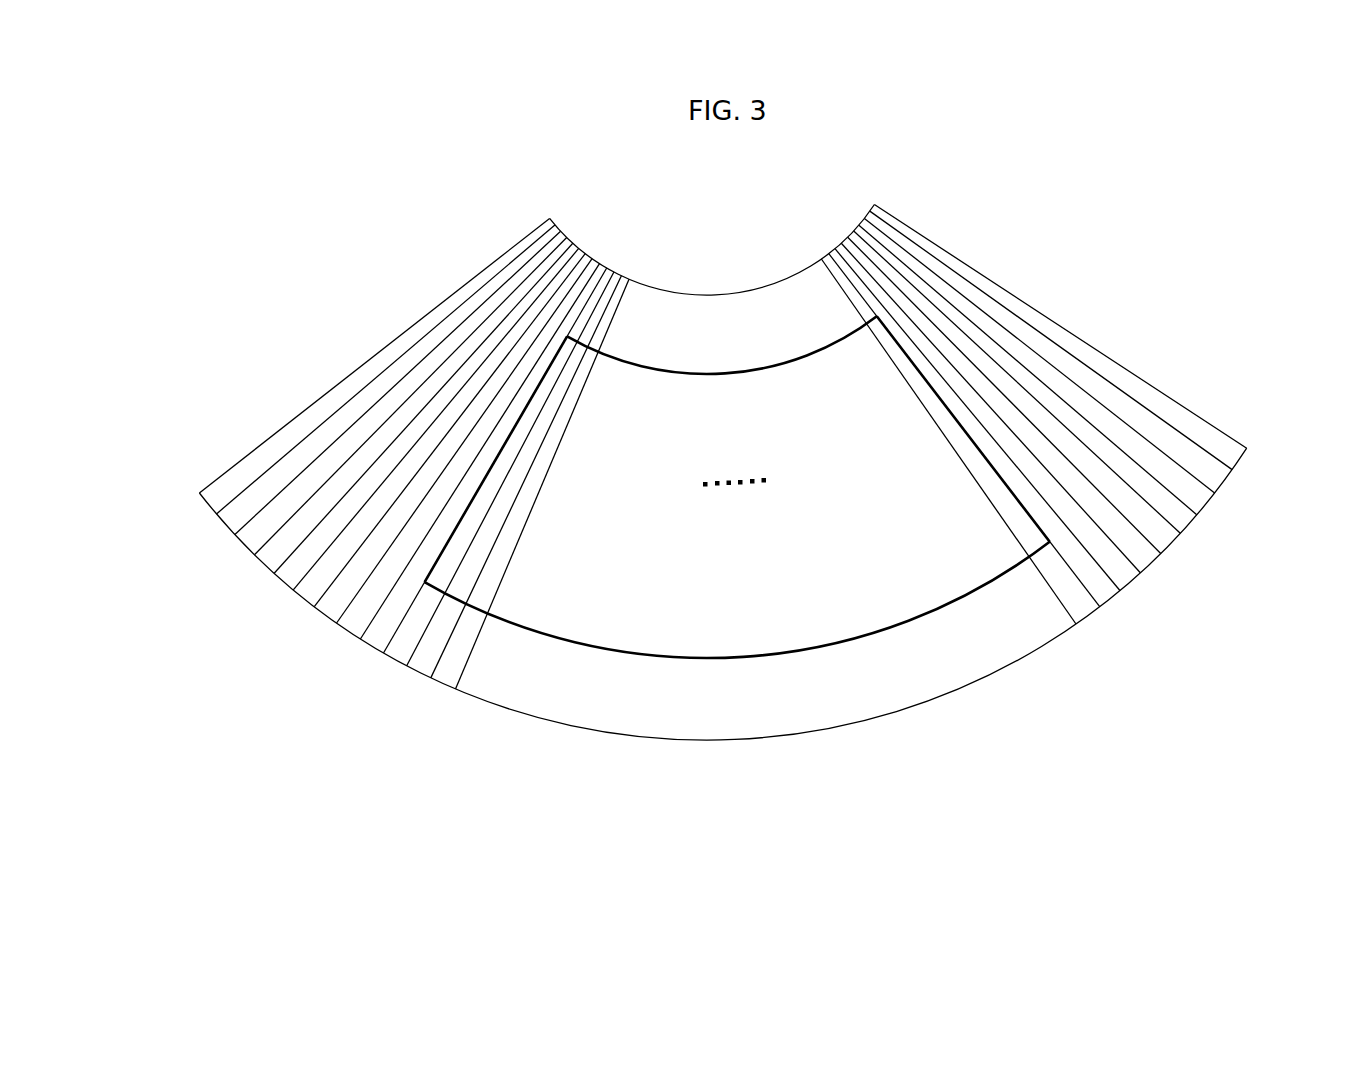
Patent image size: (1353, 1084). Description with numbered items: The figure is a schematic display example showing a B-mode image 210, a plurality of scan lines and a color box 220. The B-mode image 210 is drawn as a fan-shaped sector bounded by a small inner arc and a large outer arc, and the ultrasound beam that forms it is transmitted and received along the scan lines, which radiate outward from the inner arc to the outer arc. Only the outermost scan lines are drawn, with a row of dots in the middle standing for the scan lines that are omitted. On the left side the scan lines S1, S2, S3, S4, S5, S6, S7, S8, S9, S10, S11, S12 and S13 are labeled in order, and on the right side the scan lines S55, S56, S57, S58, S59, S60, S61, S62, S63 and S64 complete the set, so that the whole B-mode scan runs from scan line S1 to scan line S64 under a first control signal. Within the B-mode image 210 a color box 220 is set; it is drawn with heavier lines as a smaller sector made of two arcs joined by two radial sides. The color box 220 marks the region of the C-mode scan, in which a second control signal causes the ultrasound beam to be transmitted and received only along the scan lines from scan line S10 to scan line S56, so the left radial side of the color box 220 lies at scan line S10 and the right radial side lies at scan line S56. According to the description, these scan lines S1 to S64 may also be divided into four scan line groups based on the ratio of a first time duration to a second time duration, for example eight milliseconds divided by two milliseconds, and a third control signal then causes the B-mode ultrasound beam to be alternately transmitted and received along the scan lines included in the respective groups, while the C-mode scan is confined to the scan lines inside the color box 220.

The B-mode image 210 is at (710, 290).
The color box 220 is at (722, 372).
The scan line S1 is at (203, 491).
The scan line S2 is at (218, 512).
The scan line S3 is at (236, 533).
The scan line S4 is at (255, 554).
The scan line S5 is at (275, 573).
The scan line S6 is at (294, 589).
The scan line S7 is at (315, 606).
The scan line S8 is at (337, 622).
The scan line S9 is at (361, 638).
The scan line S10 is at (384, 652).
The scan line S11 is at (407, 665).
The scan line S12 is at (431, 677).
The scan line S13 is at (456, 688).
The scan line S55 is at (1076, 624).
The scan line S56 is at (1100, 607).
The scan line S57 is at (1120, 591).
The scan line S58 is at (1140, 573).
The scan line S59 is at (1161, 554).
The scan line S60 is at (1180, 533).
The scan line S61 is at (1197, 515).
The scan line S62 is at (1215, 493).
The scan line S63 is at (1232, 470).
The scan line S64 is at (1241, 447).